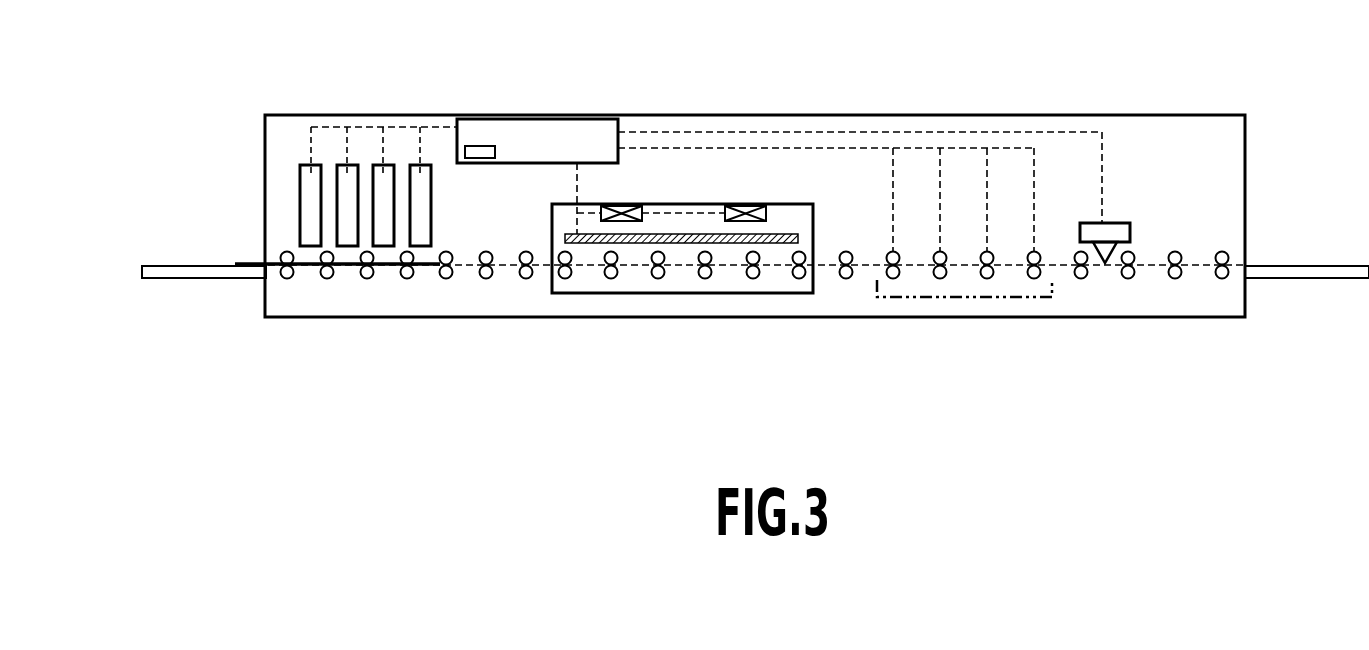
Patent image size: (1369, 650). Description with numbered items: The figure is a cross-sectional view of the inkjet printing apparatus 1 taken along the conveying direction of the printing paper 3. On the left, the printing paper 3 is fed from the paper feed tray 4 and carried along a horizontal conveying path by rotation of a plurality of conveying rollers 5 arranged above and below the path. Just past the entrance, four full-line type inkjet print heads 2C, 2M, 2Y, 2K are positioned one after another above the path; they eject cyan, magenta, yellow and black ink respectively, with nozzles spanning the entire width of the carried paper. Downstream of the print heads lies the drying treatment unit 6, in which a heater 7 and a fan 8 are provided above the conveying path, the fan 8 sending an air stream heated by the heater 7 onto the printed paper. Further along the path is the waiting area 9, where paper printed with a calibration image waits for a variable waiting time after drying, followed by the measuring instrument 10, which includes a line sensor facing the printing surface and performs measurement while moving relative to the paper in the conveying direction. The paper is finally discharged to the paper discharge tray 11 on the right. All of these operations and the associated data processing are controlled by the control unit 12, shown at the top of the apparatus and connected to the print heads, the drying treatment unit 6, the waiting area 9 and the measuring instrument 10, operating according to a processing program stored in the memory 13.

The printing apparatus 1 is at (919, 113).
The print head (cyan) 2C is at (307, 172).
The print head (magenta) 2M is at (343, 172).
The print head (yellow) 2Y is at (380, 172).
The print head (black) 2K is at (416, 172).
The printing paper 3 is at (303, 274).
The paper feed tray 4 is at (203, 271).
The conveying rollers 5 is at (406, 279).
The drying treatment unit 6 is at (572, 290).
The heater 7 is at (785, 235).
The fan 8 is at (620, 205).
The waiting area 9 is at (923, 297).
The measuring instrument 10 is at (1112, 222).
The paper discharge tray 11 is at (1275, 265).
The control unit 12 is at (592, 148).
The memory 13 is at (473, 145).